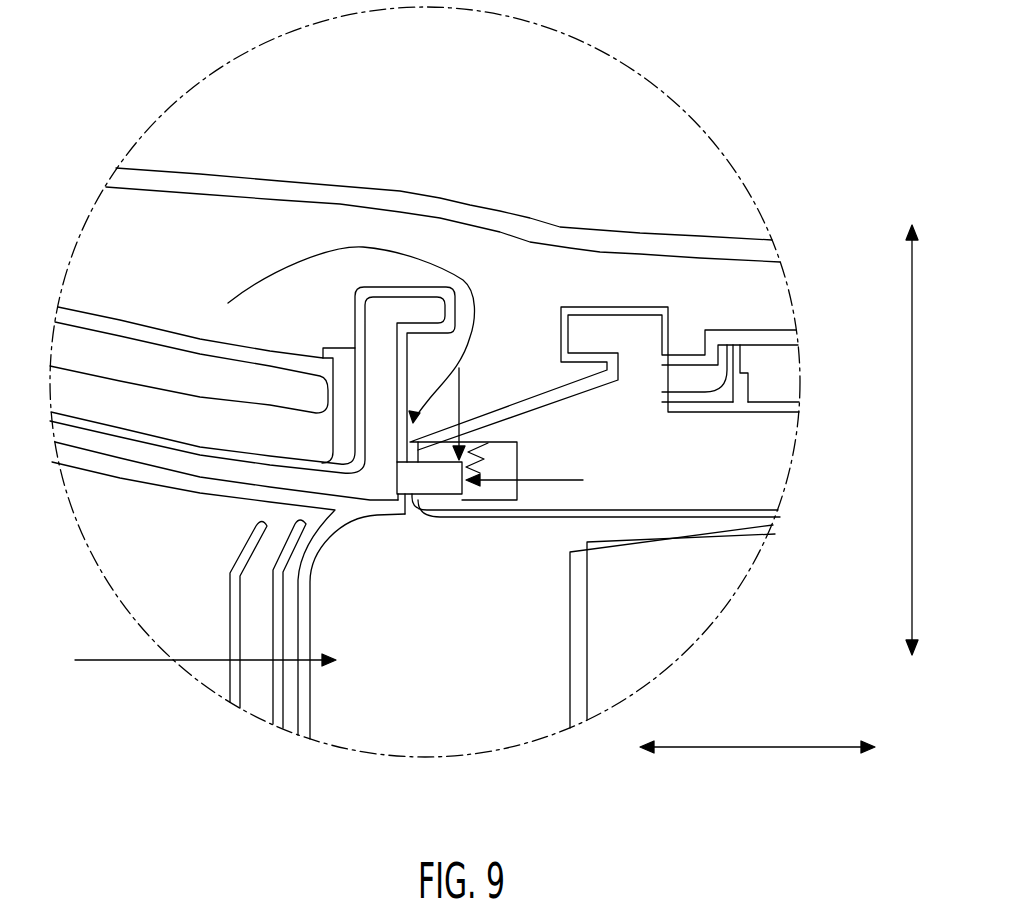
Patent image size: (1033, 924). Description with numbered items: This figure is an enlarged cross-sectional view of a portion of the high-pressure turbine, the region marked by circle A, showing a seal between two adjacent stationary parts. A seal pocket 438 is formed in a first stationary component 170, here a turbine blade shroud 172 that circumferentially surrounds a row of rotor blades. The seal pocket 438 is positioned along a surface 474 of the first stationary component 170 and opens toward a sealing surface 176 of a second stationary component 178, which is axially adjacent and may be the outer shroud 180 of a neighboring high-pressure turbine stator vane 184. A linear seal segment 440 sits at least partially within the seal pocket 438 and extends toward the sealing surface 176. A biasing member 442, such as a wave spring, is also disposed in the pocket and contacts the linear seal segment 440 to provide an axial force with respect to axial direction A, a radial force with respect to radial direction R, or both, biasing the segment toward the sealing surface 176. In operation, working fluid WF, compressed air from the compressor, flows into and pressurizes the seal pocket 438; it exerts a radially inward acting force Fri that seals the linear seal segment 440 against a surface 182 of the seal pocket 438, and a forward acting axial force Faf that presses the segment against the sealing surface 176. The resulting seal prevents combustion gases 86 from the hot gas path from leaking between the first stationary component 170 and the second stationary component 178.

The combustion gases 86 is at (97, 658).
The first stationary component 170 is at (661, 443).
The turbine blade shroud 172 is at (730, 454).
The sealing surface 176 is at (410, 503).
The second stationary component 178 is at (165, 323).
The outer shroud 180 is at (190, 427).
The surface of the seal pocket 182 is at (493, 492).
The high-pressure turbine stator vane 184 is at (202, 493).
The seal pocket 438 is at (510, 452).
The linear seal segment 440 is at (448, 487).
The biasing member 442 is at (478, 443).
The surface of the first stationary component 474 is at (455, 448).
The working fluid WF is at (345, 250).
The radially inward acting force Fri is at (460, 384).
The forward acting axial force Faf is at (583, 482).
The radial direction R is at (894, 440).
The axial direction A is at (632, 68).